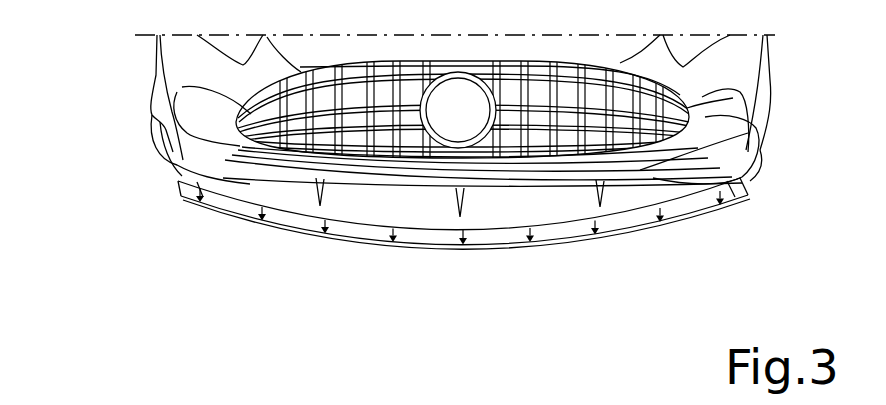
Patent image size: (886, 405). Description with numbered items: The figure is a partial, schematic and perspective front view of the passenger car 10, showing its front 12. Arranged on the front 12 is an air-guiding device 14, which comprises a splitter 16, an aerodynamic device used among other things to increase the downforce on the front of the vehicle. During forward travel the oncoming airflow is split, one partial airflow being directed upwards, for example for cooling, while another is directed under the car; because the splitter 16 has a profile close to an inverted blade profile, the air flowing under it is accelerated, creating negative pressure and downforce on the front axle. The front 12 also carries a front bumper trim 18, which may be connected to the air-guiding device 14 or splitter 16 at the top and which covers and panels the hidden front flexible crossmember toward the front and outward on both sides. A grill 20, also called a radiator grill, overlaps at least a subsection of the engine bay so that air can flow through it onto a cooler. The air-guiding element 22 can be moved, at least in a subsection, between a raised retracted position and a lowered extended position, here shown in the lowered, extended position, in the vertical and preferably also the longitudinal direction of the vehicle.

The passenger car 10 is at (140, 200).
The front 12 is at (110, 58).
The air-guiding device 14 is at (772, 181).
The splitter 16 is at (346, 208).
The front bumper trim 18 is at (748, 63).
The grill 20 is at (626, 124).
The air-guiding element 22 is at (494, 258).